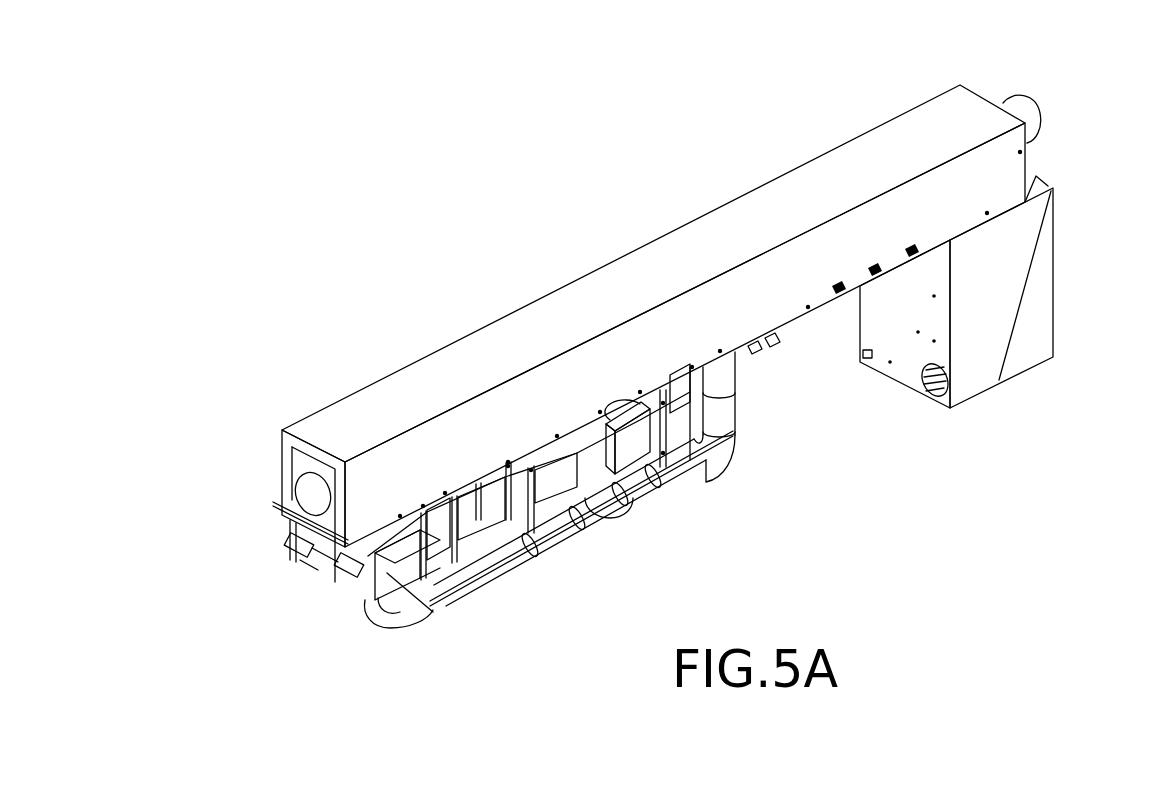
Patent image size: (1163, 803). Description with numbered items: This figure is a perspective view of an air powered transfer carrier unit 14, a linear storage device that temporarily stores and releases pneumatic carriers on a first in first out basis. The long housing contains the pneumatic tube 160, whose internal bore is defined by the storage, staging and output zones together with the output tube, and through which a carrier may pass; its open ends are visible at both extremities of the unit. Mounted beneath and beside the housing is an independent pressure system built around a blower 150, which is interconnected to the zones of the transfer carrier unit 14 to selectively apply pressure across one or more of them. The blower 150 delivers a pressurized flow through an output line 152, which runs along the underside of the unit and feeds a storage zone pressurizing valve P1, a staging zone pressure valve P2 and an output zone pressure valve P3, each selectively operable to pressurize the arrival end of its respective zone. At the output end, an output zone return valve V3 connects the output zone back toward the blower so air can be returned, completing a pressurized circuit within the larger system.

The air powered transfer carrier unit 14 is at (402, 209).
The pneumatic tube 160 is at (1040, 113).
The blower 150 is at (1033, 355).
The output line 152 is at (503, 557).
The storage zone pressurizing valve P1 is at (637, 445).
The staging zone pressure valve P2 is at (618, 521).
The output zone pressure valve P3 is at (430, 612).
The output zone return valve V3 is at (310, 562).